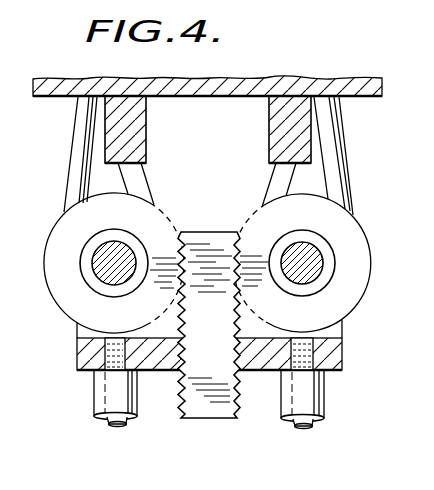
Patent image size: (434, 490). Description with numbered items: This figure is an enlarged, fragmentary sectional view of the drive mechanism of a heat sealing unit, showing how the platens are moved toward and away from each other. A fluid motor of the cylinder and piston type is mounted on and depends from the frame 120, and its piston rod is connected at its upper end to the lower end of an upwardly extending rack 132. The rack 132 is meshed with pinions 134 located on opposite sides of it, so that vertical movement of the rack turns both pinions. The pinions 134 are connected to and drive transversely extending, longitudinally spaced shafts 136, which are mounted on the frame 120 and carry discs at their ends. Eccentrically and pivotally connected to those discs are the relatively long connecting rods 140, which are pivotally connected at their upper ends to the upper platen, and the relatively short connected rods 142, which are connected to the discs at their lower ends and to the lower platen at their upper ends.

The frame 120 is at (343, 342).
The rack 132 is at (207, 408).
The pinions 134 is at (67, 286).
The shafts 136 is at (106, 257).
The connecting rods 140 is at (81, 146).
The connected rods 142 is at (137, 184).